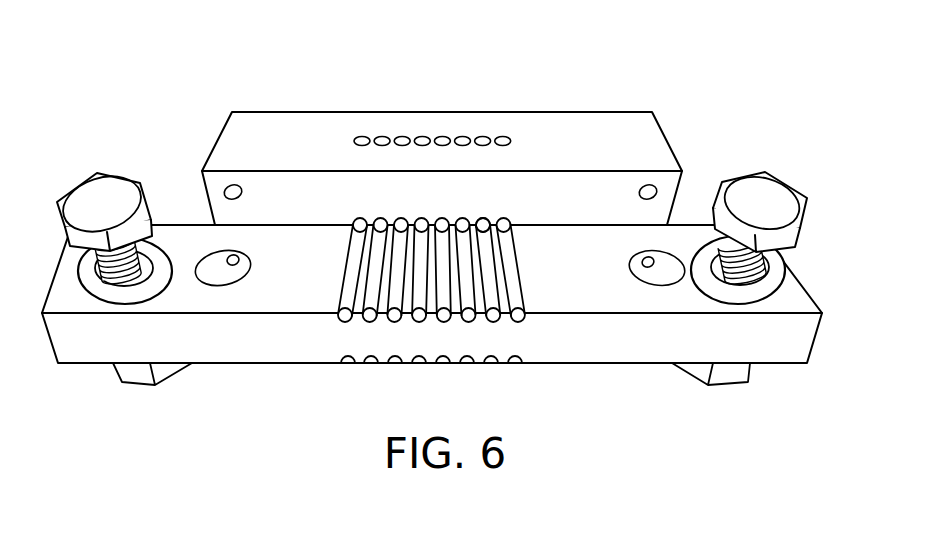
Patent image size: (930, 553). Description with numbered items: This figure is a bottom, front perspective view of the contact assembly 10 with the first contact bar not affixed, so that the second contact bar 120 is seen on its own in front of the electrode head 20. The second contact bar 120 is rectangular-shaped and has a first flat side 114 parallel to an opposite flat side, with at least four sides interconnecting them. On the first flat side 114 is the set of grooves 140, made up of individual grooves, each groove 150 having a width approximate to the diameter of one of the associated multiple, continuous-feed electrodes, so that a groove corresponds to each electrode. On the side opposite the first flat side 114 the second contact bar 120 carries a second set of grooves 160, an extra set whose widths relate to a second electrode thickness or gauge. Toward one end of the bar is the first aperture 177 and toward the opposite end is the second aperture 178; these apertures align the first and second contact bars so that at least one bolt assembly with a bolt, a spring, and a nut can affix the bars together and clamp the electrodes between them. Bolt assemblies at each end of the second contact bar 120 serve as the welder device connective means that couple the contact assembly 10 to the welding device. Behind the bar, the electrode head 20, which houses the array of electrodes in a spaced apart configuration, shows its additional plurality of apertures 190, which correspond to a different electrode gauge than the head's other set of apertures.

The contact assembly 10 is at (432, 232).
The electrode head 20 is at (583, 123).
The first flat side 114 is at (585, 261).
The second contact bar 120 is at (773, 352).
The set of grooves 140 is at (487, 207).
The groove 150 is at (405, 237).
The second set of grooves 160 is at (417, 370).
The first aperture 177 is at (240, 277).
The second aperture 178 is at (635, 275).
The plurality of apertures 190 is at (462, 130).